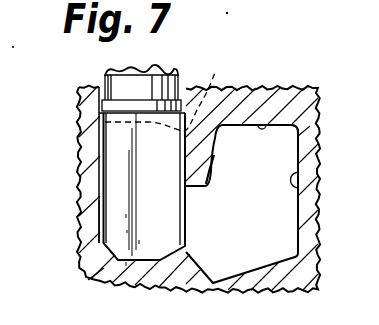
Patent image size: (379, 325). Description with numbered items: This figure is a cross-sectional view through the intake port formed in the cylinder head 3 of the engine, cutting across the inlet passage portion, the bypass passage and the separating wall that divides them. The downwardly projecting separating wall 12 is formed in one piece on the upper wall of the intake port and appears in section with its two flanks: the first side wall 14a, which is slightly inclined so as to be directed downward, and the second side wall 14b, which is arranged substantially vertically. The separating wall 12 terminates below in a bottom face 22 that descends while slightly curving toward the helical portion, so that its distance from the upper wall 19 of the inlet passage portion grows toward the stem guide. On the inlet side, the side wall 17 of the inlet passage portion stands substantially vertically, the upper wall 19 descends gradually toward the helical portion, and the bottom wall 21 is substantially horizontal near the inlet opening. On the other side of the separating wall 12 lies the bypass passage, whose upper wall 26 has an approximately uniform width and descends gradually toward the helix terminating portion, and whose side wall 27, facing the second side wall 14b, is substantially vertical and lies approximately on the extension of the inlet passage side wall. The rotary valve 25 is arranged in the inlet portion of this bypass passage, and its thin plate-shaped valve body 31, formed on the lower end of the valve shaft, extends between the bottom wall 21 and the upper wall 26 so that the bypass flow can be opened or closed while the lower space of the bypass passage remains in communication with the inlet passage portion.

The cylinder head 3 is at (316, 106).
The separating wall 12 is at (214, 163).
The first side wall 14a is at (215, 157).
The second side wall 14b is at (152, 189).
The side wall of the inlet passage portion 17 is at (323, 183).
The upper wall of the inlet passage portion 19 is at (268, 123).
The bottom wall of the inlet passage portion 21 is at (274, 62).
The bottom face of the separating wall 22 is at (204, 188).
The rotary valve 25 is at (115, 145).
The upper wall of the bypass passage 26 is at (168, 88).
The side wall of the bypass passage 27 is at (110, 222).
The valve body 31 is at (105, 280).